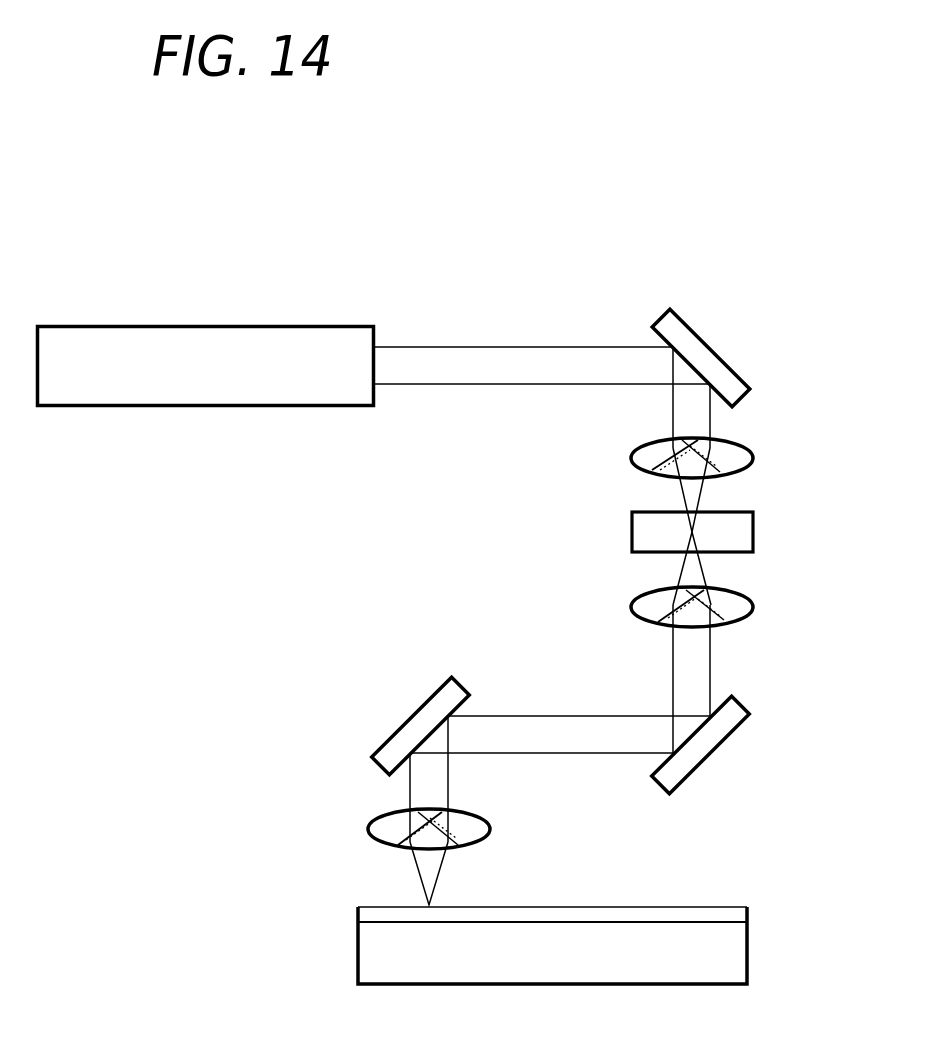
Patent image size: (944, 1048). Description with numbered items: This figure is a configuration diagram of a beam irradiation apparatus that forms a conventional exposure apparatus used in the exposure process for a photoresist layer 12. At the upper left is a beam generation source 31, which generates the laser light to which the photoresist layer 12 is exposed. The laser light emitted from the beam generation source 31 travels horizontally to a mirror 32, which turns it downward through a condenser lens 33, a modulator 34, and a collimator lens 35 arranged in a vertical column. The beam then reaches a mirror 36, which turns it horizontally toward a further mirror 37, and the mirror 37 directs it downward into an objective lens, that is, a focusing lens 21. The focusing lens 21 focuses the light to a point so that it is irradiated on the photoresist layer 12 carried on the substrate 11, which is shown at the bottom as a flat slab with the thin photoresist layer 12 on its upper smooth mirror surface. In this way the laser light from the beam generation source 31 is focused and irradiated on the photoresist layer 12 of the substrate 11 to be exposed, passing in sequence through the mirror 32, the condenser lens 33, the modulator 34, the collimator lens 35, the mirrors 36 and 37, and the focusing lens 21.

The beam generation source 31 is at (174, 327).
The mirror 32 is at (698, 338).
The condenser lens 33 is at (754, 460).
The modulator 34 is at (755, 535).
The collimator lens 35 is at (755, 610).
The mirror 36 is at (732, 733).
The mirror 37 is at (415, 712).
The objective lens 21 is at (492, 829).
The photoresist layer 12 is at (733, 914).
The substrate 11 is at (725, 962).